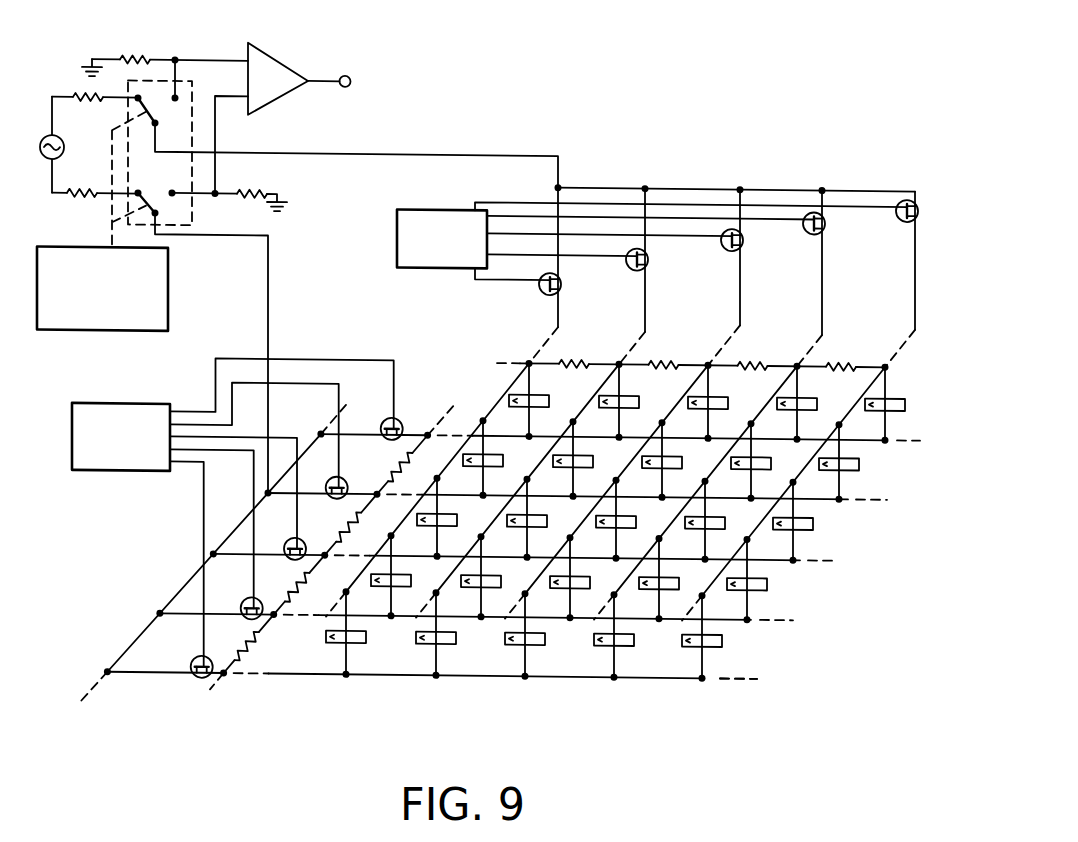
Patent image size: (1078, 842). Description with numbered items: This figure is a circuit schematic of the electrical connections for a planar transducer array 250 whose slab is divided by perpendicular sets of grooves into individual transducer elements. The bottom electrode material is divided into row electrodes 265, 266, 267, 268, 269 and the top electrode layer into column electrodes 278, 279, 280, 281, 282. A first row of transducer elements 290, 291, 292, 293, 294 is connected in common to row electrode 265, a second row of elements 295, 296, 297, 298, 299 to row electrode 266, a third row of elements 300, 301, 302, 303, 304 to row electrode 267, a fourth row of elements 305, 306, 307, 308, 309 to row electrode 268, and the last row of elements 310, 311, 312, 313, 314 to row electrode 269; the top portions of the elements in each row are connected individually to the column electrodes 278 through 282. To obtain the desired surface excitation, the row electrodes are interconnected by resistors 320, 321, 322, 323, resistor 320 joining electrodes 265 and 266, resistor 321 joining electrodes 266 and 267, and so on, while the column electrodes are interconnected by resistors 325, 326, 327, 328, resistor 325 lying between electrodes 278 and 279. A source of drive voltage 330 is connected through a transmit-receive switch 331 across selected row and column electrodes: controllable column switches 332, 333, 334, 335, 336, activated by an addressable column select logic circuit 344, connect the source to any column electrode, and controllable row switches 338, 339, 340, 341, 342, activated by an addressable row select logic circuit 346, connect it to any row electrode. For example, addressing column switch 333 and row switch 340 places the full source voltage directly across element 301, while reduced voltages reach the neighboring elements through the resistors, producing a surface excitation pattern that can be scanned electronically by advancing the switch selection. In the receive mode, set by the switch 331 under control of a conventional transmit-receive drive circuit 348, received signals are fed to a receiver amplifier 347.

The array 250 is at (745, 688).
The row electrode 265 is at (680, 677).
The row electrode 266 is at (735, 618).
The row electrode 267 is at (782, 558).
The row electrode 268 is at (835, 497).
The row electrode 269 is at (870, 438).
The column electrode 278 is at (498, 403).
The column electrode 279 is at (589, 401).
The column electrode 280 is at (677, 402).
The column electrode 281 is at (764, 405).
The column electrode 282 is at (850, 407).
The transducer element 290 is at (327, 645).
The transducer element 291 is at (420, 645).
The transducer element 292 is at (508, 645).
The transducer element 293 is at (598, 646).
The transducer element 294 is at (687, 646).
The transducer element 295 is at (384, 588).
The transducer element 296 is at (476, 588).
The transducer element 297 is at (565, 588).
The transducer element 298 is at (654, 588).
The transducer element 299 is at (740, 588).
The transducer element 300 is at (432, 527).
The transducer element 301 is at (518, 527).
The transducer element 302 is at (614, 527).
The transducer element 303 is at (702, 527).
The transducer element 304 is at (792, 527).
The transducer element 305 is at (478, 467).
The transducer element 306 is at (568, 467).
The transducer element 307 is at (658, 467).
The transducer element 308 is at (748, 467).
The transducer element 309 is at (832, 467).
The transducer element 310 is at (523, 407).
The transducer element 311 is at (611, 407).
The transducer element 312 is at (700, 407).
The transducer element 313 is at (790, 407).
The transducer element 314 is at (872, 407).
The resistor 320 is at (263, 651).
The resistor 321 is at (306, 592).
The resistor 322 is at (358, 530).
The resistor 323 is at (409, 470).
The resistor 325 is at (573, 357).
The resistor 326 is at (663, 357).
The resistor 327 is at (752, 357).
The resistor 328 is at (841, 357).
The source of excitation or drive voltage 330 is at (61, 142).
The transmit-receive switch 331 is at (192, 219).
The column switch 332 is at (562, 278).
The column switch 333 is at (651, 260).
The column switch 334 is at (744, 242).
The column switch 335 is at (829, 223).
The column switch 336 is at (921, 211).
The row switch 338 is at (210, 660).
The row switch 339 is at (261, 601).
The row switch 340 is at (304, 542).
The row switch 341 is at (346, 482).
The row switch 342 is at (402, 422).
The column select logic circuit 344 is at (425, 270).
The row select logic circuit 346 is at (92, 468).
The receiver amplifier 347 is at (285, 67).
The transmit-receive drive circuit 348 is at (143, 335).